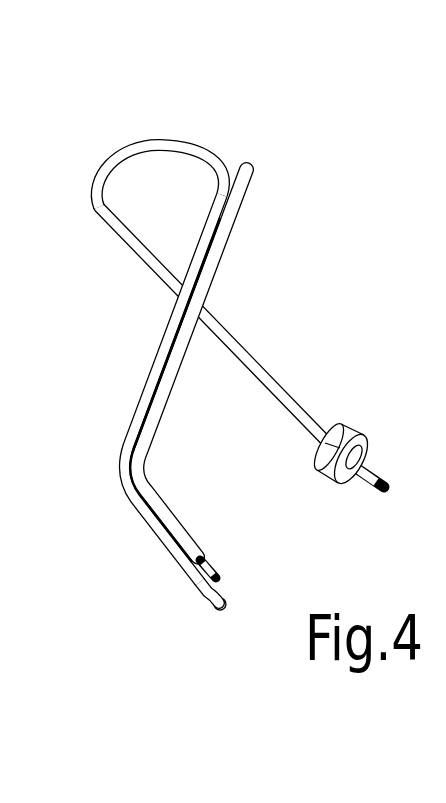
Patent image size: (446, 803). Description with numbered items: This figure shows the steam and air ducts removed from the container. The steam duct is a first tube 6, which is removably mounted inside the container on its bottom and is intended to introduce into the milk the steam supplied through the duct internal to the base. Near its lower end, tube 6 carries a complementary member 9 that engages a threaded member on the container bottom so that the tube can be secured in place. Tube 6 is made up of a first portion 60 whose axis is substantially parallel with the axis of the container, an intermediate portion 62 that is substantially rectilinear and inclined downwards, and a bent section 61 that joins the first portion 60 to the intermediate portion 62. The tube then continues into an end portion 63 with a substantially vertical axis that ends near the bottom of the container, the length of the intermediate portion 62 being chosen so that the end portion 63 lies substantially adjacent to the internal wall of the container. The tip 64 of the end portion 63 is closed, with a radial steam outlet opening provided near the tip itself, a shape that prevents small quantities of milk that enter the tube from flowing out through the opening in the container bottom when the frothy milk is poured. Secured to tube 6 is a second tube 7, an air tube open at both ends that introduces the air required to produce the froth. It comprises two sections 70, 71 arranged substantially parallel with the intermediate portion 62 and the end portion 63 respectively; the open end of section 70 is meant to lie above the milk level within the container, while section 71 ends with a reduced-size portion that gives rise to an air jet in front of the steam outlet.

The first tube 6 is at (187, 373).
The first portion 60 is at (268, 378).
The bent section 61 is at (97, 210).
The intermediate portion 62 is at (153, 373).
The end portion 63 is at (212, 604).
The tip 64 is at (229, 610).
The second tube 7 is at (217, 374).
The section 70 is at (223, 240).
The section 71 is at (168, 513).
The complementary member 9 is at (318, 457).